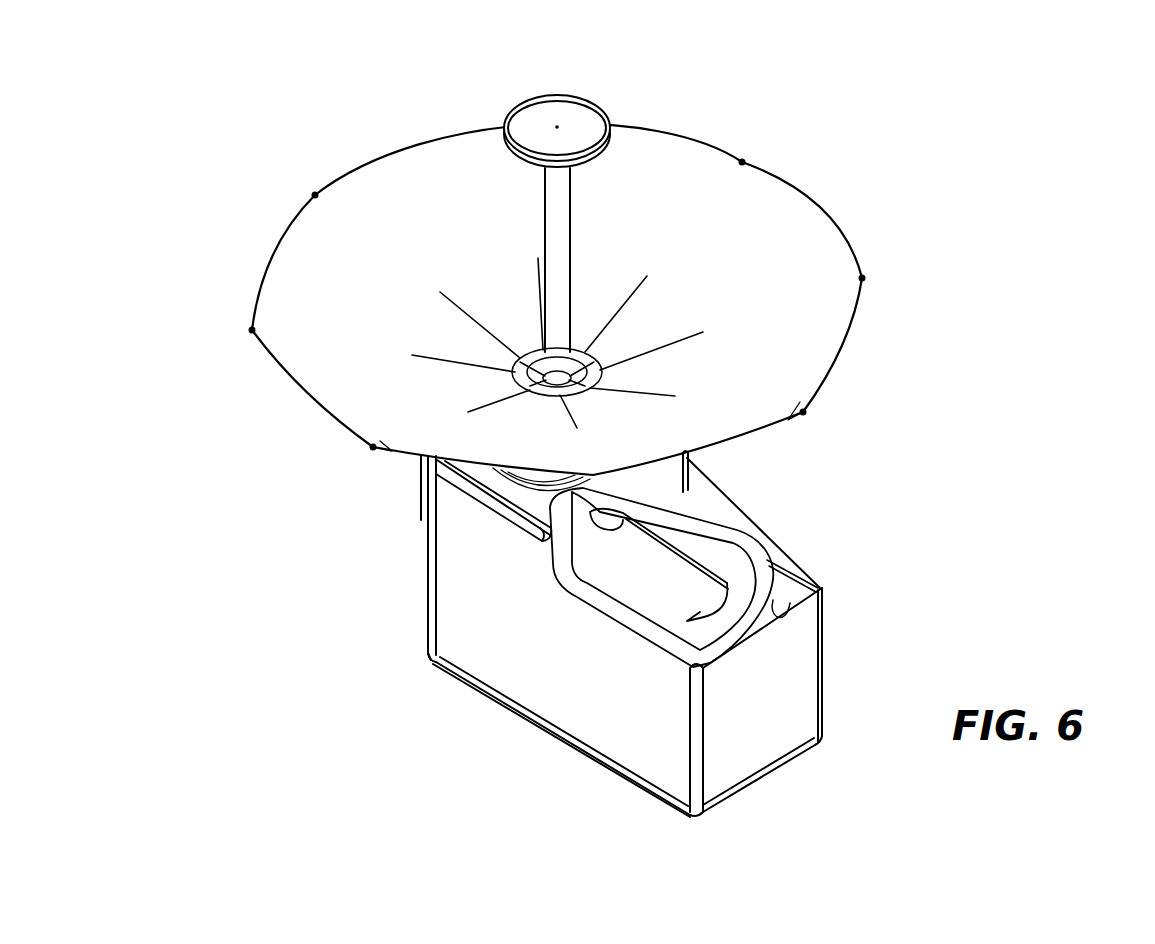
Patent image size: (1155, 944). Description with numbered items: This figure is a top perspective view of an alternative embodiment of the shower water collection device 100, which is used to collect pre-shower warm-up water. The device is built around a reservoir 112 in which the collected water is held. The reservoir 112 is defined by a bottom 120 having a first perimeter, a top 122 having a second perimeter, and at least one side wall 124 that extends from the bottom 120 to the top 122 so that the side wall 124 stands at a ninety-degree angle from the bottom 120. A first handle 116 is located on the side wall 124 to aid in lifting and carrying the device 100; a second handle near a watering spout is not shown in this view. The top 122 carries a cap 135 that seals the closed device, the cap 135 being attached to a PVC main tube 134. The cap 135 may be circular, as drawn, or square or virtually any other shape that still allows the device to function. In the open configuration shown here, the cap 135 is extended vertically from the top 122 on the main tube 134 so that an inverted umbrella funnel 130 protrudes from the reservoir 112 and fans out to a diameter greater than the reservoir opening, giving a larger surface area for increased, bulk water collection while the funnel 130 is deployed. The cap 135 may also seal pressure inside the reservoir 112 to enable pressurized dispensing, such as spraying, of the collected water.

The shower water collection device 100 is at (702, 419).
The reservoir 112 is at (621, 634).
The first handle 116 is at (705, 527).
The bottom 120 is at (539, 739).
The top 122 is at (500, 488).
The side wall 124 is at (790, 721).
The inverted umbrella funnel 130 is at (741, 263).
The PVC main tube 134 is at (545, 222).
The cap 135 is at (569, 96).